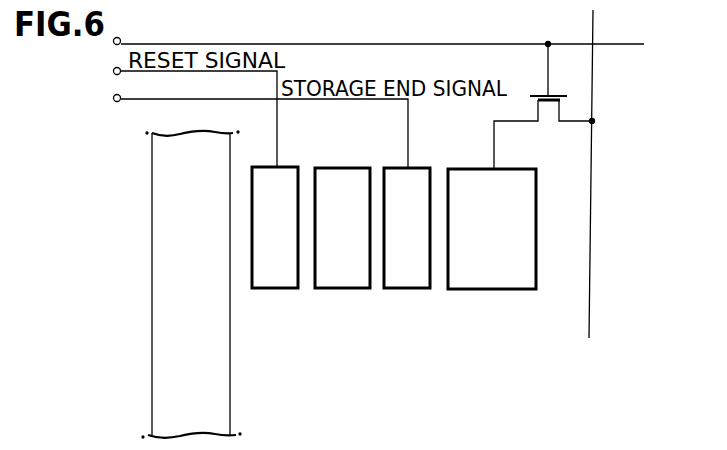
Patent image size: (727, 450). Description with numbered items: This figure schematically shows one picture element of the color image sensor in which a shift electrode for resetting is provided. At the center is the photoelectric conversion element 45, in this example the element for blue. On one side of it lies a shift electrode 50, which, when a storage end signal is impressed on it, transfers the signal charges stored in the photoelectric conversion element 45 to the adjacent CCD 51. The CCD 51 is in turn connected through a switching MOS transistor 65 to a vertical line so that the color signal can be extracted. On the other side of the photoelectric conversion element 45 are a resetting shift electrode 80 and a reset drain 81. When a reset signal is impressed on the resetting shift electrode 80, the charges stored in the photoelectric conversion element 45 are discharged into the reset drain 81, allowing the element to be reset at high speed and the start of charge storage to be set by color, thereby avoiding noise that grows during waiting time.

The reset drain 81 is at (152, 300).
The shift electrode for resetting 80 is at (275, 289).
The photoelectric conversion element 45 is at (338, 289).
The shift electrode 50 is at (407, 289).
The CCD 51 is at (490, 290).
The switching MOS transistor 65 is at (537, 108).